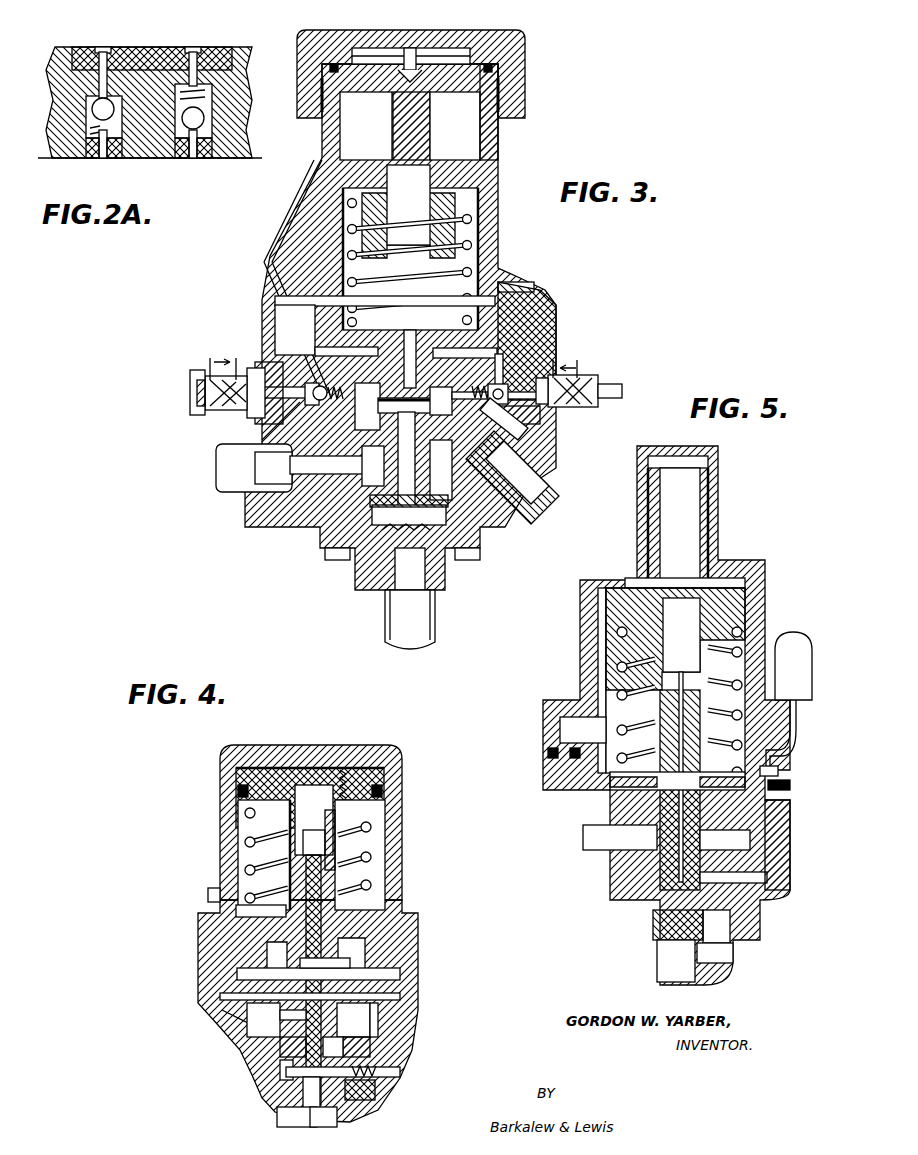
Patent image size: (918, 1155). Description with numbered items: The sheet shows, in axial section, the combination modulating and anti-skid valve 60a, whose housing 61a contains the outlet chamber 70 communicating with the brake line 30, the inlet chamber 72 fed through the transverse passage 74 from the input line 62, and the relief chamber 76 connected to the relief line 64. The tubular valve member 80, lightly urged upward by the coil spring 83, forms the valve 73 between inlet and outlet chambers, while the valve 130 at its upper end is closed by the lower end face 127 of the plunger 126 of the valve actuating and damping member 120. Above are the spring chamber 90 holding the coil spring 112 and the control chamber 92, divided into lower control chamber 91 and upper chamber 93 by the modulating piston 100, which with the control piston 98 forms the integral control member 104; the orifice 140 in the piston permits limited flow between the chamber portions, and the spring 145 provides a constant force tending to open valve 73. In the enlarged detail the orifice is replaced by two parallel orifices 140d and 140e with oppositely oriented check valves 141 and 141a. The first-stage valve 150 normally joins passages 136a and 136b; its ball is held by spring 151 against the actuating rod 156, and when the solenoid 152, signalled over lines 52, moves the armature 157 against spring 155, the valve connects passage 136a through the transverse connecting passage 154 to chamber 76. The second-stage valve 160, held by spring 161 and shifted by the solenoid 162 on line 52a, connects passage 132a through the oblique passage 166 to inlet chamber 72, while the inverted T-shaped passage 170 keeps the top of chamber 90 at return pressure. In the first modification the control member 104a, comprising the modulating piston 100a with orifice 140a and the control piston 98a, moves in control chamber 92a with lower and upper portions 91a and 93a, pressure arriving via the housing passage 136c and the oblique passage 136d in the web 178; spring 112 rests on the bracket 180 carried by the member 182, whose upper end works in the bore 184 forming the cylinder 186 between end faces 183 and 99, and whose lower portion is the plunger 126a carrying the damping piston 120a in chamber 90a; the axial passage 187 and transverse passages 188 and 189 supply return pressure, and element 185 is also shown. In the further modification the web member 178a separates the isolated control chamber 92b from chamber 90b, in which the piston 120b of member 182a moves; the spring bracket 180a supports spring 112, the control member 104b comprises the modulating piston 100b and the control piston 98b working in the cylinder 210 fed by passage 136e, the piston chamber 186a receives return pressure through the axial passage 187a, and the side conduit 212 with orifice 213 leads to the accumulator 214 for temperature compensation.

In FIG. 2A, the modulating piston 100 is at (232, 48).
In FIG. 3, the modulating piston 100 is at (490, 45).
In FIG. 2A, the orifice 140d is at (104, 46).
In FIG. 2A, the orifice 140e is at (194, 46).
In FIG. 2A, the check valve 141 is at (66, 160).
In FIG. 2A, the check valve 141a is at (178, 160).
In FIG. 3, the orifice structure 140 is at (412, 48).
In FIG. 3, the upper control chamber 93 is at (446, 54).
In FIG. 3, the control member 104 is at (432, 112).
In FIG. 3, the control piston 98 is at (392, 146).
In FIG. 3, the control chamber 92 is at (478, 136).
In FIG. 3, the lower control chamber 91 is at (474, 155).
In FIG. 3, the passage 136a is at (295, 218).
In FIG. 3, the coil spring 112 is at (480, 222).
In FIG. 4, the coil spring 112 is at (372, 890).
In FIG. 5, the coil spring 112 is at (622, 665).
In FIG. 3, the spring chamber 90 is at (480, 256).
In FIG. 3, the combination modulating and anti-skid valve 60a is at (540, 290).
In FIG. 3, the spring 145 is at (520, 290).
In FIG. 4, the spring 145 is at (262, 1018).
In FIG. 3, the housing portion 61a is at (546, 330).
In FIG. 3, the passage 132a is at (505, 370).
In FIG. 4, the passage 132a is at (400, 1040).
In FIG. 3, the line 52a is at (578, 360).
In FIG. 3, the valve actuating and damping member 120 is at (285, 300).
In FIG. 3, the actuating rod 156 is at (268, 366).
In FIG. 3, the lines 52 is at (220, 358).
In FIG. 3, the solenoid armature 157 is at (258, 368).
In FIG. 3, the valve 150 is at (322, 385).
In FIG. 3, the spring 151 is at (340, 386).
In FIG. 3, the inverted T-shaped passage structure 170 is at (414, 336).
In FIG. 3, the valve actuating plunger 126 is at (449, 388).
In FIG. 5, the valve actuating plunger 126 is at (656, 928).
In FIG. 3, the spring 161 is at (499, 385).
In FIG. 3, the valve 160 is at (513, 385).
In FIG. 4, the valve 160 is at (384, 1076).
In FIG. 3, the solenoid 162 is at (596, 388).
In FIG. 3, the spring 155 is at (190, 392).
In FIG. 3, the solenoid 152 is at (200, 408).
In FIG. 3, the passage 136b is at (262, 434).
In FIG. 3, the transverse connecting passage 154 is at (362, 420).
In FIG. 4, the transverse connecting passage 154 is at (280, 1068).
In FIG. 3, the relief chamber 76 is at (392, 412).
In FIG. 4, the relief chamber 76 is at (292, 1076).
In FIG. 5, the relief chamber 76 is at (722, 964).
In FIG. 3, the valve 130 is at (504, 419).
In FIG. 4, the valve 130 is at (300, 1090).
In FIG. 3, the oblique passage 166 is at (540, 436).
In FIG. 4, the oblique passage 166 is at (380, 1092).
In FIG. 3, the input line 62 is at (236, 492).
In FIG. 3, the transverse passage 74 is at (322, 474).
In FIG. 3, the valve member 80 is at (424, 478).
In FIG. 4, the valve member 80 is at (312, 1118).
In FIG. 5, the valve member 80 is at (690, 985).
In FIG. 3, the inlet chamber 72 is at (432, 486).
In FIG. 4, the inlet chamber 72 is at (280, 1115).
In FIG. 3, the outlet chamber 70 is at (440, 516).
In FIG. 3, the relief line 64 is at (520, 512).
In FIG. 3, the valve 73 is at (380, 525).
In FIG. 3, the coil spring 83 is at (430, 570).
In FIG. 3, the brake line 30 is at (416, 622).
In FIG. 4, the modulating piston 100a is at (280, 768).
In FIG. 4, the oblique passage 136d is at (214, 980).
In FIG. 4, the control member 104a is at (246, 740).
In FIG. 4, the upper portion of control chamber 93a is at (300, 766).
In FIG. 4, the control piston 98a is at (344, 770).
In FIG. 4, the flow limiting orifice 140a is at (386, 788).
In FIG. 5, the flow limiting orifice 140a is at (742, 578).
In FIG. 4, the lower portion of control chamber 91a is at (248, 858).
In FIG. 4, the control chamber 92a is at (372, 870).
In FIG. 4, the upper end face of cylinder 99 is at (314, 820).
In FIG. 4, the upper end face 183 is at (313, 839).
In FIG. 4, the cylinder 186 is at (300, 815).
In FIG. 4, the cylindrical axial bore 184 is at (336, 838).
In FIG. 4, the port 185 is at (208, 893).
In FIG. 4, the axial passage 187 is at (244, 915).
In FIG. 4, the member 182 is at (330, 900).
In FIG. 4, the bracket 180 is at (378, 930).
In FIG. 4, the transverse housing web 178 is at (396, 980).
In FIG. 4, the second transverse passage 189 is at (329, 975).
In FIG. 4, the chamber 90a is at (380, 1000).
In FIG. 4, the housing passage 136c is at (220, 1010).
In FIG. 4, the damping and brake release piston 120a is at (392, 1030).
In FIG. 4, the valve actuating plunger 126a is at (262, 1050).
In FIG. 4, the transverse passage 188 is at (372, 1056).
In FIG. 4, the lower end face 127 is at (340, 1047).
In FIG. 5, the modulating piston 100b is at (595, 590).
In FIG. 5, the cylinder 210 is at (700, 466).
In FIG. 5, the control piston 98b is at (690, 523).
In FIG. 5, the passage 136e is at (650, 504).
In FIG. 5, the control member 104b is at (615, 632).
In FIG. 5, the piston chamber 186a is at (606, 680).
In FIG. 5, the control chamber 92b is at (600, 700).
In FIG. 5, the member 182a is at (660, 742).
In FIG. 5, the spring bracket 180a is at (556, 716).
In FIG. 5, the housing web member 178a is at (650, 815).
In FIG. 5, the axial passage 187a is at (640, 865).
In FIG. 5, the damping and skid control piston 120b is at (650, 880).
In FIG. 5, the chamber 90b is at (748, 842).
In FIG. 5, the accumulator 214 is at (792, 650).
In FIG. 5, the side conduit 212 is at (786, 723).
In FIG. 5, the flow limiting orifice 213 is at (778, 770).